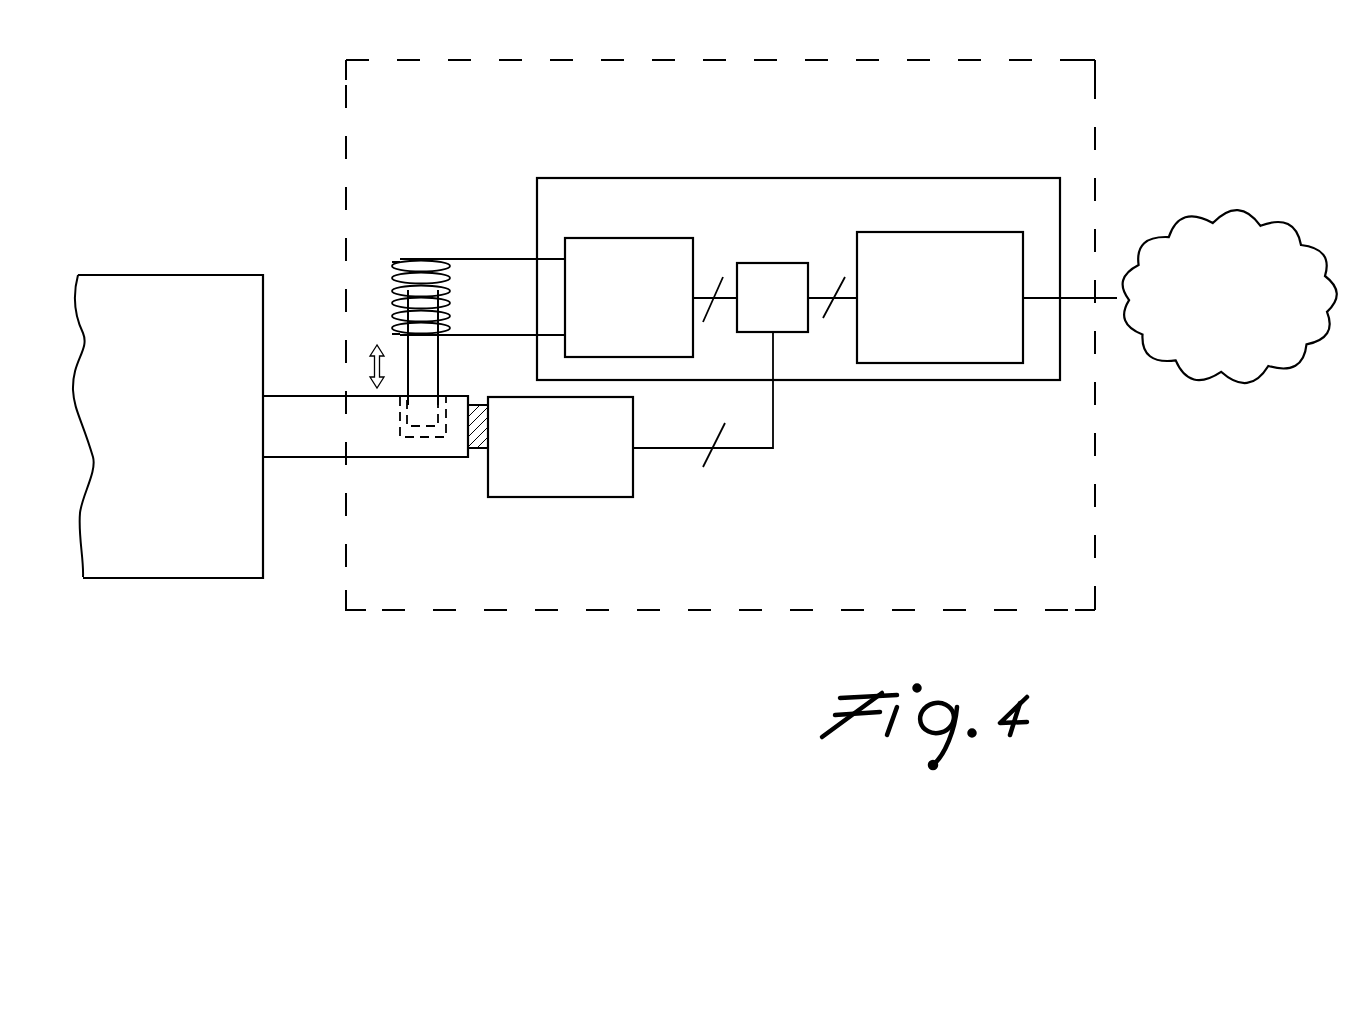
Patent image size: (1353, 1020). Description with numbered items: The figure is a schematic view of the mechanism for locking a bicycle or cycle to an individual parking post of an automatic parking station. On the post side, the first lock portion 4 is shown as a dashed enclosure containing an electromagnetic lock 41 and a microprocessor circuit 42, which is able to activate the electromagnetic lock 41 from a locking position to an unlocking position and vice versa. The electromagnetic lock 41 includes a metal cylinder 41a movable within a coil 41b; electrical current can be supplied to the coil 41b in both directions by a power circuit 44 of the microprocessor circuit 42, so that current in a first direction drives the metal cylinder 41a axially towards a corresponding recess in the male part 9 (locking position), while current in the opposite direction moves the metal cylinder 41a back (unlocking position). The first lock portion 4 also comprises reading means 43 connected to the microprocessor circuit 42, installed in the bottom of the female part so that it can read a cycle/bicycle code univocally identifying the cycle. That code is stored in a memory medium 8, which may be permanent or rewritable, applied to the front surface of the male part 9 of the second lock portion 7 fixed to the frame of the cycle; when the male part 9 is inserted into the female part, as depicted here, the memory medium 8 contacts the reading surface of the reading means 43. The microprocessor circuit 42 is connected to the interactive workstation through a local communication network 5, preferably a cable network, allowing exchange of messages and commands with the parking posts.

The first lock portion 4 is at (515, 612).
The local communication network 5 is at (1212, 350).
The second lock portion 7 is at (218, 532).
The memory medium 8 is at (478, 450).
The male part 9 is at (315, 420).
The electromagnetic lock 41 is at (467, 273).
The metal cylinder 41a is at (418, 368).
The coil 41b is at (411, 260).
The microprocessor circuit 42 is at (827, 294).
The reading means 43 is at (595, 480).
The power circuit 44 is at (620, 252).